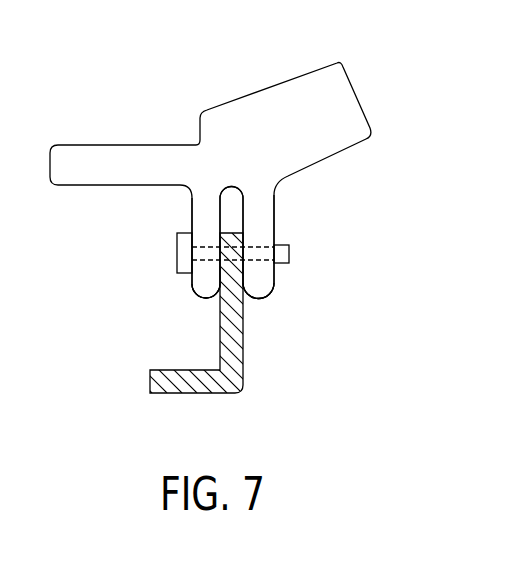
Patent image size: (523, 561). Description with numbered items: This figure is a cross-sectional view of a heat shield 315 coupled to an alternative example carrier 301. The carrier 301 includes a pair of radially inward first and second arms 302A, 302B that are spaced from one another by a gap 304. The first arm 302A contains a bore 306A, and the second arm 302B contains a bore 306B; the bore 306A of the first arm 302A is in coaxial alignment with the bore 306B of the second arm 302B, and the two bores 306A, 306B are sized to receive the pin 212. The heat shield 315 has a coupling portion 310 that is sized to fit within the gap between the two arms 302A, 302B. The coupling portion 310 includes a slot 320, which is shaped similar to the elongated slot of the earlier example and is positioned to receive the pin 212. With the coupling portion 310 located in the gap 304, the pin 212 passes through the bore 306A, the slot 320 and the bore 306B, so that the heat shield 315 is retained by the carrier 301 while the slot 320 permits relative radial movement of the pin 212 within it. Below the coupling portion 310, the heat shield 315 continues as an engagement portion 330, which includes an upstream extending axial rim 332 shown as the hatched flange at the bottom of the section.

The carrier 301 is at (281, 101).
The first arm 302A is at (268, 200).
The second arm 302B is at (192, 204).
The gap 304 is at (234, 178).
The slot 320 is at (237, 233).
The pin 212 is at (179, 258).
The bore of the first arm 306A is at (260, 266).
The bore of the second arm 306B is at (204, 267).
The coupling portion 310 is at (233, 283).
The heat shield 315 is at (237, 332).
The engagement portion 330 is at (237, 380).
The axial rim 332 is at (190, 387).